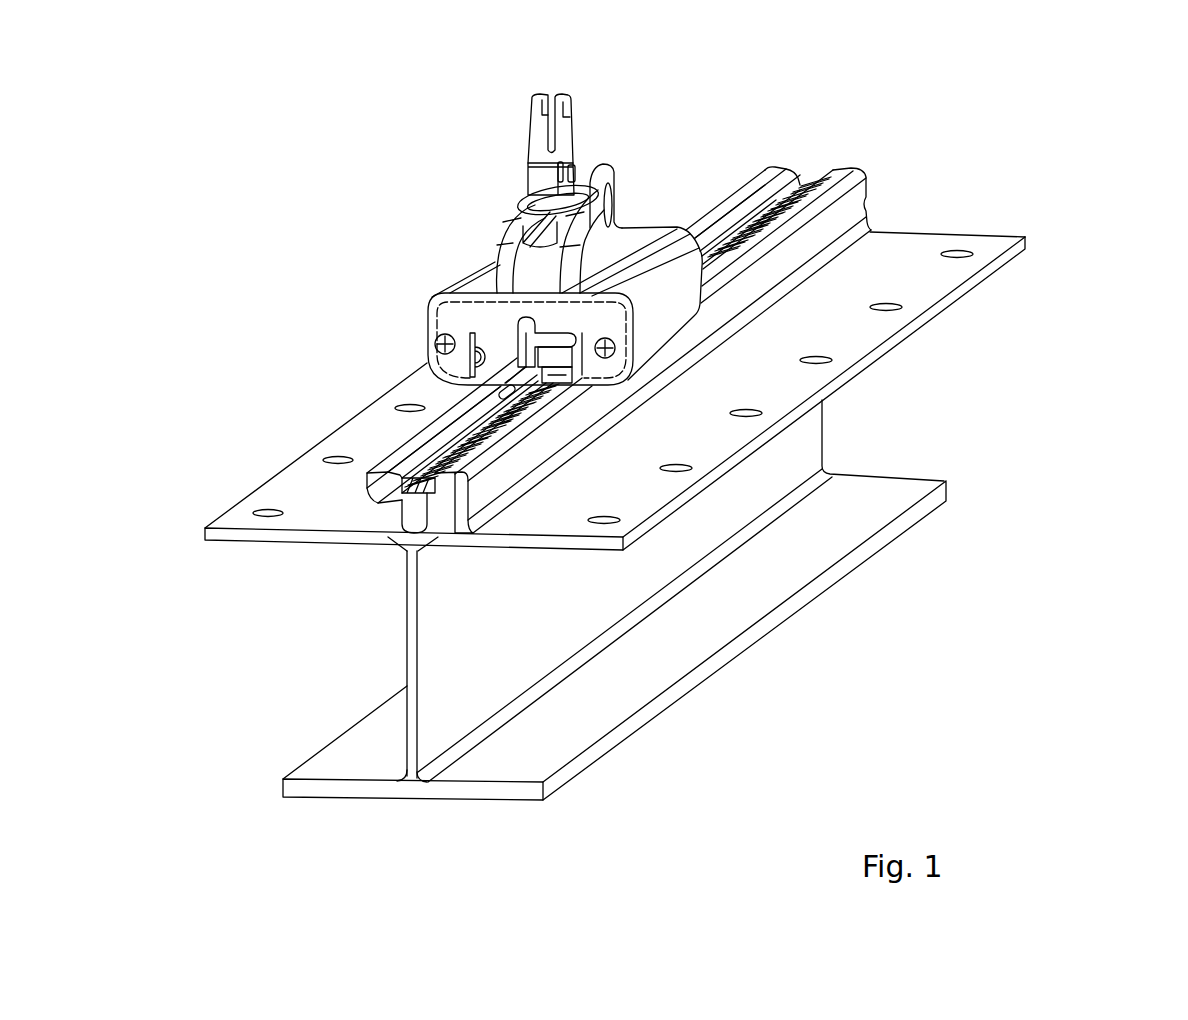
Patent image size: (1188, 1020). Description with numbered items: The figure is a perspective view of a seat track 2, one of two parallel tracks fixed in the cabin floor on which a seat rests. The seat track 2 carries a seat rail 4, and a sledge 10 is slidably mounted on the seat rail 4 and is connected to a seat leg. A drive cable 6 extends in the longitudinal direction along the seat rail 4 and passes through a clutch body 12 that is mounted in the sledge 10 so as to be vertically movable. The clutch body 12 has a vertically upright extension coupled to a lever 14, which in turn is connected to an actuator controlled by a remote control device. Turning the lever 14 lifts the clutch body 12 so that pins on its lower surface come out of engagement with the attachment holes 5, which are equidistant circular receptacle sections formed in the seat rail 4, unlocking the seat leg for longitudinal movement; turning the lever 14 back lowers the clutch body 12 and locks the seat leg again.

The seat track 2 is at (844, 331).
The seat rail 4 is at (866, 201).
The attachment holes 5 is at (398, 493).
The drive cable 6 is at (530, 386).
The sledge 10 is at (692, 272).
The clutch body 12 is at (521, 334).
The lever 14 is at (582, 141).